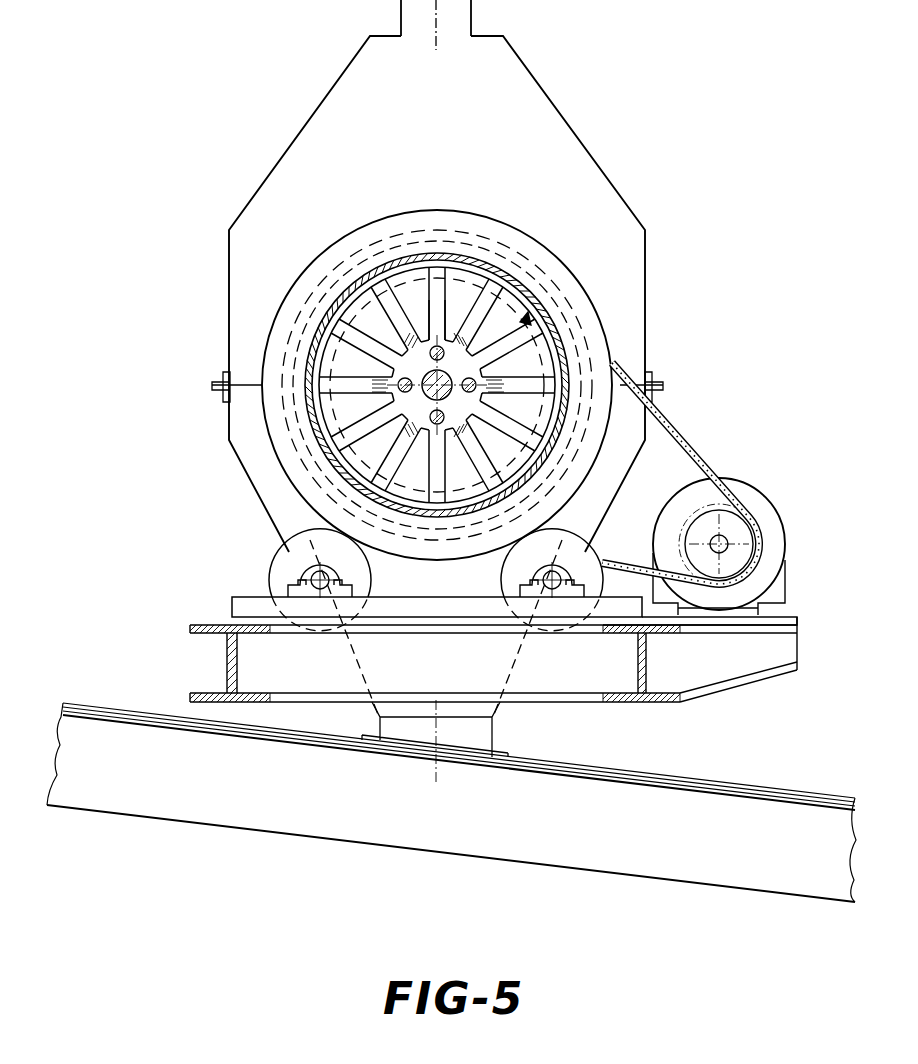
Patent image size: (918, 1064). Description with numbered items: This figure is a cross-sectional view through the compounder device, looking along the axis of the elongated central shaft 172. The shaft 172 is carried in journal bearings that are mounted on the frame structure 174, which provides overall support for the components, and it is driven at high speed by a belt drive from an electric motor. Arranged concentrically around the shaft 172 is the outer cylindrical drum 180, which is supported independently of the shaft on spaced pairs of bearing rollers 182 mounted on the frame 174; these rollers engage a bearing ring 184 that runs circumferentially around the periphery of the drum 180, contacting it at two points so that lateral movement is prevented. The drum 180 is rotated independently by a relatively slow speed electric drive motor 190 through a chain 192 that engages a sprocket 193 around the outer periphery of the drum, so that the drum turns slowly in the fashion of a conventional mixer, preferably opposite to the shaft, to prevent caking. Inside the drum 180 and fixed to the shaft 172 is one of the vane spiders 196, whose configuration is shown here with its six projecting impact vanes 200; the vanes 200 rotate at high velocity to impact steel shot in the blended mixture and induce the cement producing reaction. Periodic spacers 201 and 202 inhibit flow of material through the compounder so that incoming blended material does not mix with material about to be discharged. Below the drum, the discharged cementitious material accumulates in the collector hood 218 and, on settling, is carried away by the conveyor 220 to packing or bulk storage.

The central shaft 172 is at (450, 380).
The frame structure 174 is at (233, 613).
The outer cylindrical drum 180 is at (340, 302).
The bearing rollers 182 is at (568, 542).
The bearing rings 184 is at (588, 297).
The electric drive motor 190 is at (747, 502).
The chain 192 is at (680, 437).
The sprocket 193 is at (492, 253).
The vane spiders 196 is at (540, 300).
The impact vanes 200 is at (435, 277).
The periodic spacer 201 is at (508, 287).
The periodic spacer 202 is at (413, 293).
The collector hood 218 is at (530, 88).
The conveyor 220 is at (570, 868).